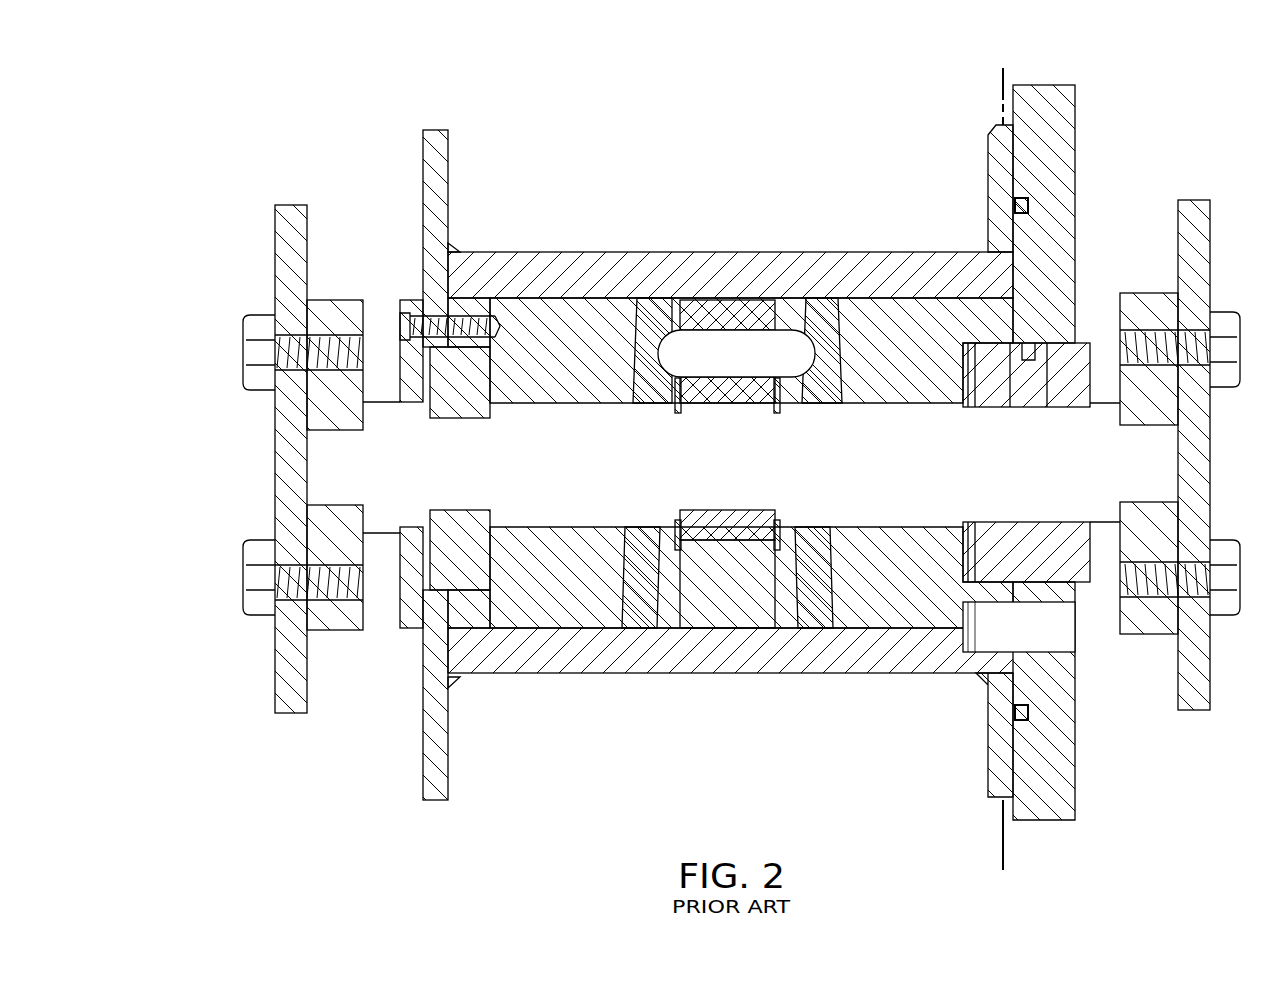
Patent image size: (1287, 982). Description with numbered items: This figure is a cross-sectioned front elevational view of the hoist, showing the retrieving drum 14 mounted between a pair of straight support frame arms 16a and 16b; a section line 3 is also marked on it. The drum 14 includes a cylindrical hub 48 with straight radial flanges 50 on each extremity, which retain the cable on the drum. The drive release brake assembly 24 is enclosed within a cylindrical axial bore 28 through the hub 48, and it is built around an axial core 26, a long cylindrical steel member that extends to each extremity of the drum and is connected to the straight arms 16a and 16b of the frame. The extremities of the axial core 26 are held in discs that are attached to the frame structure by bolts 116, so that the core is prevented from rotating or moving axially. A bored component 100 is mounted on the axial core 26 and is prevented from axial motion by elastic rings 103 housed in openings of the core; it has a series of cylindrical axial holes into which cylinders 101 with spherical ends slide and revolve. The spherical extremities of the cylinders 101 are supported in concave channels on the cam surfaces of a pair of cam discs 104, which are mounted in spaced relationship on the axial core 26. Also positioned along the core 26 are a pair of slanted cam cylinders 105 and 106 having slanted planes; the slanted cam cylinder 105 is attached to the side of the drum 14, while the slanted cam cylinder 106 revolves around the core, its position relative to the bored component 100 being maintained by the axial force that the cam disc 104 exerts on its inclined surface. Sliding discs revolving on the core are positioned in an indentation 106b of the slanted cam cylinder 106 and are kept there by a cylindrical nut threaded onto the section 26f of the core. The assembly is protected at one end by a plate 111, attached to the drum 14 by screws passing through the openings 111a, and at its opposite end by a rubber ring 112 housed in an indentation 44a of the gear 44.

The section line 3- 3 is at (1000, 89).
The drum 14 is at (730, 436).
The straight support frame arm 16a is at (287, 685).
The straight support frame arm 16b is at (1200, 650).
The drive release brake assembly 24 is at (737, 309).
The axial core 26 is at (745, 462).
The threaded section of the core 26f is at (1103, 533).
The cylindrical axial bore 28 is at (685, 298).
The gear 44 is at (1018, 452).
The indentation of the gear 44a is at (1020, 212).
The cylindrical hub 48 is at (504, 250).
The straight radial flange 50 is at (452, 186).
The bored component 100 is at (740, 620).
The cylinder with spherical ends 101 is at (757, 366).
The elastic ring 103 is at (674, 524).
The cam disc 104 is at (656, 396).
The slanted cam cylinder 105 is at (527, 396).
The slanted cam cylinder 106 is at (1018, 424).
The indentation 106b is at (995, 338).
The plate 111 is at (400, 615).
The opening 111a is at (408, 318).
The rubber ring 112 is at (1014, 204).
The bolt 116 is at (240, 600).